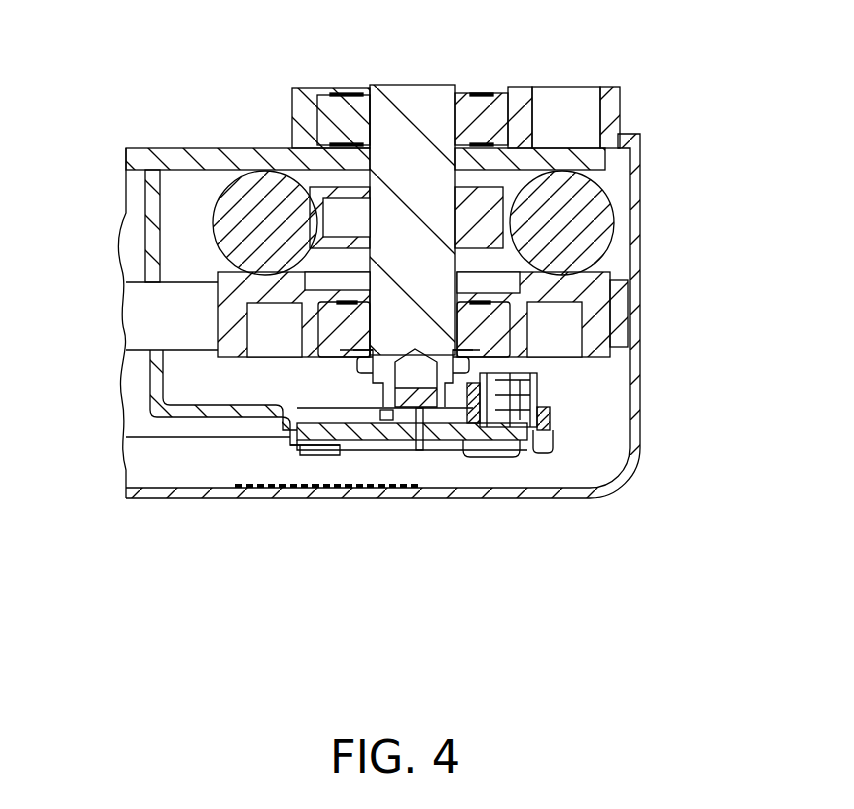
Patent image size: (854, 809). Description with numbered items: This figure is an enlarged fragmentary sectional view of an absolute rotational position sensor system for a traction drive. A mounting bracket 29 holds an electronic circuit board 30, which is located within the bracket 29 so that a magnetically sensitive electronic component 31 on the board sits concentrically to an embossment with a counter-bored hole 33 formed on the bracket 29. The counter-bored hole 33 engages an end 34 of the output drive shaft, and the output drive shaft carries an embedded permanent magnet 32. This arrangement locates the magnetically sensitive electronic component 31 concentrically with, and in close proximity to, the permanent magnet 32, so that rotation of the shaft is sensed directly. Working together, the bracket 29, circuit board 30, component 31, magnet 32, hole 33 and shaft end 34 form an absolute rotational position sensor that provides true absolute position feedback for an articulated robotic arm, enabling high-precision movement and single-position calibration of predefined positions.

The mounting bracket 29 is at (243, 408).
The electronic circuit board 30 is at (367, 430).
The magnetically sensitive electronic component 31 is at (423, 428).
The permanent magnet 32 is at (428, 400).
The counter-bored hole 33 is at (373, 388).
The end of the output drive shaft 34 is at (452, 390).